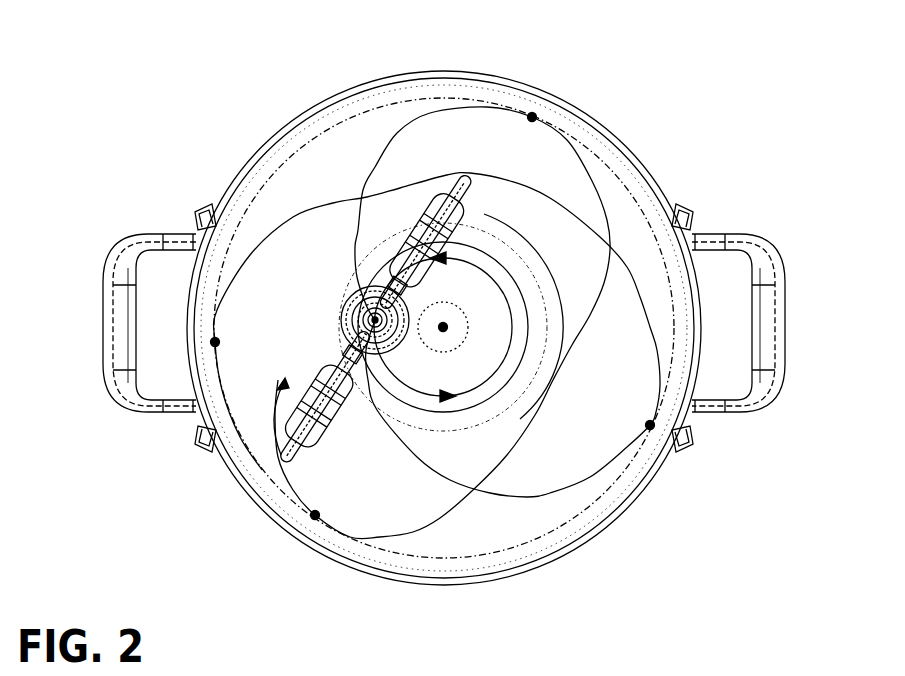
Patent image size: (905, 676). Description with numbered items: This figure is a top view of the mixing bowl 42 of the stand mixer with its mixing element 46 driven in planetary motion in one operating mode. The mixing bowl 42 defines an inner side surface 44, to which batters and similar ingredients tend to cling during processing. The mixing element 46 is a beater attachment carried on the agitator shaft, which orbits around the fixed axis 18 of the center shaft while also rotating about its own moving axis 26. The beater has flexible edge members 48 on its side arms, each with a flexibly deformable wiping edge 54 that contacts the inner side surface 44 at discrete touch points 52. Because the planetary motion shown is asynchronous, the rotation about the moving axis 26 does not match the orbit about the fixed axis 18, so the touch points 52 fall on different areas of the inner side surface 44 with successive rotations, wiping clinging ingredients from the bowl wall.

The fixed axis 18 is at (443, 327).
The moving axis 26 is at (309, 369).
The mixing bowl 42 is at (622, 133).
The inner side surface 44 is at (327, 173).
The mixing element 46 is at (345, 392).
The flexible edge member 48 is at (287, 413).
The touch points 52 is at (532, 117).
The flexibly deformable wiping edge 54 is at (297, 430).